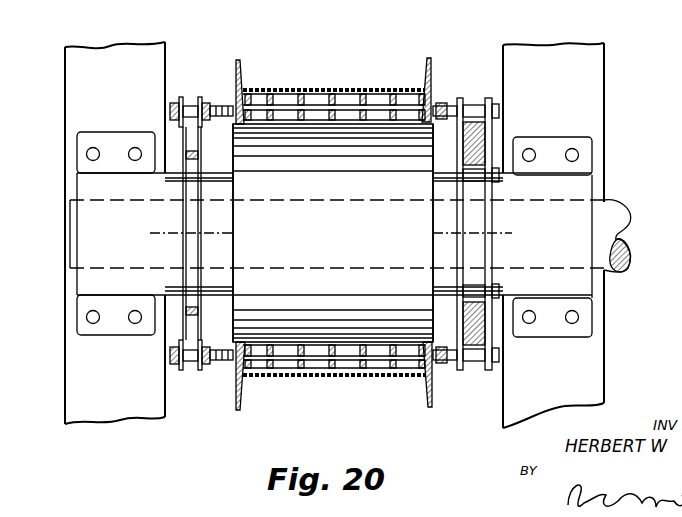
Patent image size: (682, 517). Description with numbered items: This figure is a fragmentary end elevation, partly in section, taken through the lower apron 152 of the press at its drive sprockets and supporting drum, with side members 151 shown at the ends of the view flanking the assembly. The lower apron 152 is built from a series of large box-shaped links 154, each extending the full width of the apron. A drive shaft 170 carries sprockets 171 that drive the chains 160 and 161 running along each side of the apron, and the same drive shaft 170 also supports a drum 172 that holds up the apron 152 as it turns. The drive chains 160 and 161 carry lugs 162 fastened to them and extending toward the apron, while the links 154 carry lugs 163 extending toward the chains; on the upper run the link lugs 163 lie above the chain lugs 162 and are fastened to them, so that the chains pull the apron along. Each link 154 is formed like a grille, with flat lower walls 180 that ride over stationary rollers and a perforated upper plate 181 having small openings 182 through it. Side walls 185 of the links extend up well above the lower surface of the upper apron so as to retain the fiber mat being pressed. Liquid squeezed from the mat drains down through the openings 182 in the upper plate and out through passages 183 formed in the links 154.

The side plate 151 is at (78, 79).
The lower apron 152 is at (344, 122).
The links 154 is at (304, 120).
The drive chain 160 is at (181, 97).
The drive chain 161 is at (493, 139).
The lugs 162 is at (218, 120).
The lugs 163 is at (222, 88).
The drive shaft 170 is at (608, 210).
The sprockets 171 is at (184, 234).
The drum 172 is at (398, 168).
The flat lower walls 180 is at (334, 235).
The perforated upper plate 181 is at (346, 90).
The openings 182 is at (300, 94).
The passages 183 is at (261, 124).
The side walls 185 is at (240, 68).